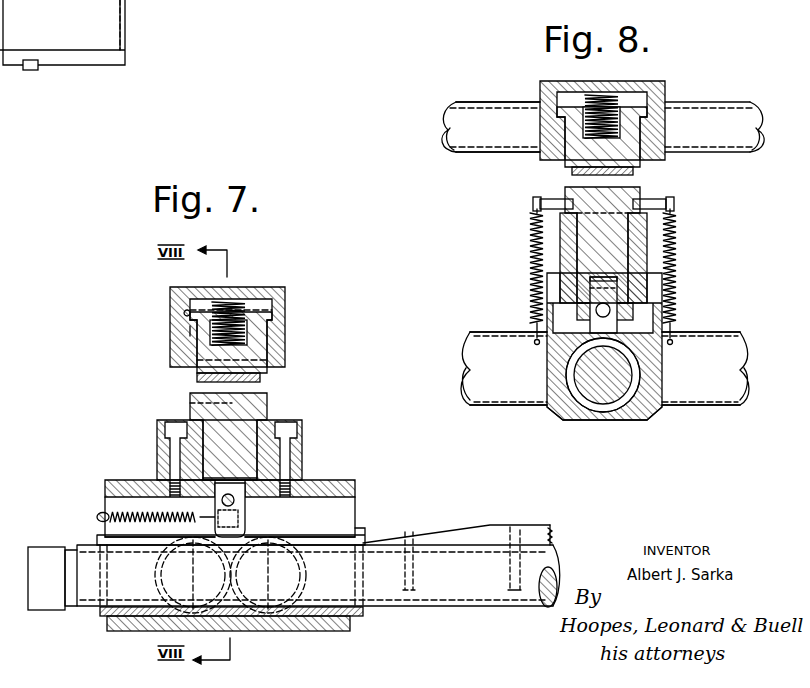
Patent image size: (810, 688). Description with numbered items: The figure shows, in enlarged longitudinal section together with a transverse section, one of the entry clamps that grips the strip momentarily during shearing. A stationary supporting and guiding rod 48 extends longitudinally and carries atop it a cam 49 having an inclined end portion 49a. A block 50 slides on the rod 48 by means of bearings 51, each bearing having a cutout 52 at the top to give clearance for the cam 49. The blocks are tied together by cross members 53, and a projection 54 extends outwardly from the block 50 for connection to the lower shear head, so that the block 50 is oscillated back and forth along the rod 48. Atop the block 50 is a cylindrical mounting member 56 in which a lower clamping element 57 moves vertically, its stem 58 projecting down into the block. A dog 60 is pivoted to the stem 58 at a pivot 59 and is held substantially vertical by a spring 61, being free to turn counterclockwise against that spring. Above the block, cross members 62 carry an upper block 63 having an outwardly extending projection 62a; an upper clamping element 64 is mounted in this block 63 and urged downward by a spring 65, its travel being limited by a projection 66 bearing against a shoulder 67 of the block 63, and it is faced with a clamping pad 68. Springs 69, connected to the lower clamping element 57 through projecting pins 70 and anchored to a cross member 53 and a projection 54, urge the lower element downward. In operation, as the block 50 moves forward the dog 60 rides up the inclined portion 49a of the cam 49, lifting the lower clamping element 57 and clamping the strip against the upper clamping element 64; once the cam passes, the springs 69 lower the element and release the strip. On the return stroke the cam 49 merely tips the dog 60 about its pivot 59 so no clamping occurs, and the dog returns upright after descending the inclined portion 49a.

In FIG. 8, the supporting and guiding rod 48 is at (603, 383).
In FIG. 7, the supporting and guiding rod 48 is at (452, 590).
In FIG. 7, the cam 49 is at (533, 522).
In FIG. 7, the inclined end portion 49a is at (433, 532).
In FIG. 8, the block 50 is at (553, 417).
In FIG. 7, the block 50 is at (130, 480).
In FIG. 8, the bearing 51 is at (627, 397).
In FIG. 7, the bearing 51 is at (98, 620).
In FIG. 8, the cutout 52 is at (580, 337).
In FIG. 7, the cutout 52 is at (118, 542).
In FIG. 8, the cross member 53 is at (692, 390).
In FIG. 7, the cross member 53 is at (160, 562).
In FIG. 8, the projection 54 is at (520, 390).
In FIG. 8, the cylindrical mounting member 56 is at (650, 265).
In FIG. 7, the cylindrical mounting member 56 is at (303, 442).
In FIG. 8, the lower clamping element 57 is at (627, 190).
In FIG. 7, the lower clamping element 57 is at (268, 403).
In FIG. 8, the stem 58 is at (667, 318).
In FIG. 7, the stem 58 is at (233, 480).
In FIG. 7, the pivot 59 is at (237, 500).
In FIG. 8, the dog 60 is at (593, 325).
In FIG. 7, the dog 60 is at (233, 532).
In FIG. 7, the spring 61 is at (130, 512).
In FIG. 8, the cross member 62 is at (722, 140).
In FIG. 7, the cross member 62 is at (170, 343).
In FIG. 8, the projection 62a is at (497, 110).
In FIG. 8, the block 63 is at (660, 117).
In FIG. 7, the block 63 is at (285, 312).
In FIG. 8, the upper clamping element 64 is at (627, 147).
In FIG. 7, the upper clamping element 64 is at (267, 370).
In FIG. 8, the spring 65 is at (605, 98).
In FIG. 7, the spring 65 is at (233, 300).
In FIG. 7, the projection 66 is at (187, 313).
In FIG. 7, the shoulder 67 is at (190, 332).
In FIG. 8, the clamping pad 68 is at (565, 180).
In FIG. 7, the clamping pad 68 is at (197, 382).
In FIG. 8, the spring 69 is at (530, 248).
In FIG. 8, the projecting pin 70 is at (533, 203).
In FIG. 7, the projecting pin 70 is at (190, 403).